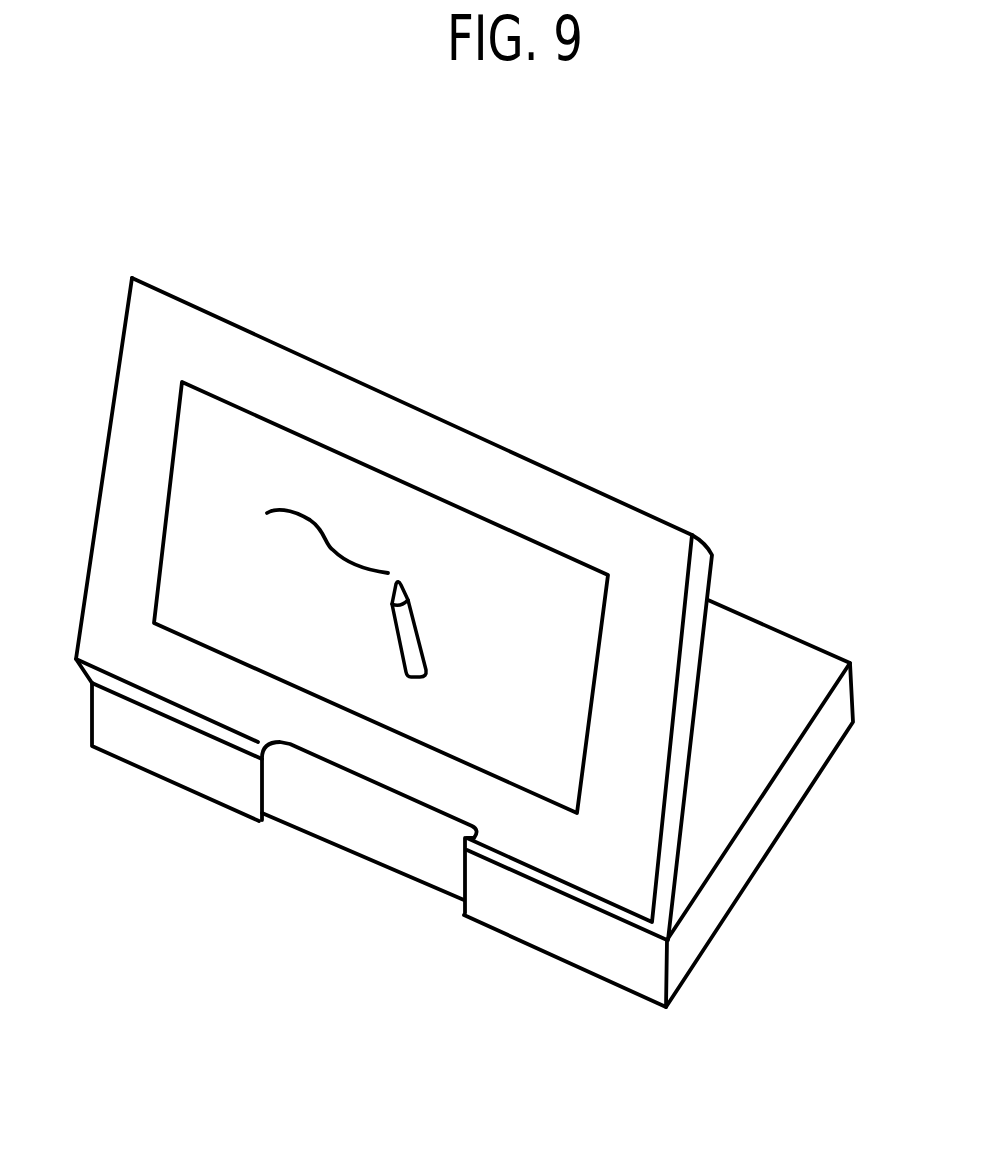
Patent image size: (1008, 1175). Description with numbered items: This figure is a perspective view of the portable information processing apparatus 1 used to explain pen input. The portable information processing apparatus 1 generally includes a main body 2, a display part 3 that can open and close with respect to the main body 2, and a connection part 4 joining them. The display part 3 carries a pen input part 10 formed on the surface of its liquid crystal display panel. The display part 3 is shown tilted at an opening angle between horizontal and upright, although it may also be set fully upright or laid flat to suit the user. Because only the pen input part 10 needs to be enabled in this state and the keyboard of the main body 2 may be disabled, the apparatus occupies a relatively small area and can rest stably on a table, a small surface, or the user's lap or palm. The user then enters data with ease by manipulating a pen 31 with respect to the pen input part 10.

The portable information processing apparatus 1 is at (336, 127).
The main body 2 is at (762, 712).
The display part 3 is at (412, 435).
The connection part 4 is at (388, 847).
The pen input part 10 is at (540, 570).
The pen 31 is at (405, 622).